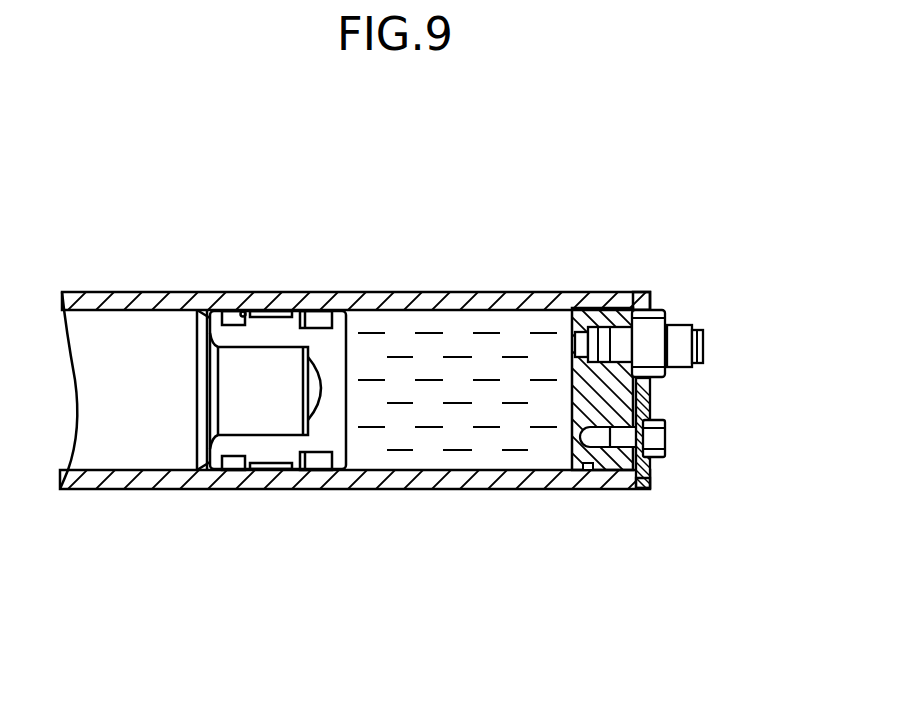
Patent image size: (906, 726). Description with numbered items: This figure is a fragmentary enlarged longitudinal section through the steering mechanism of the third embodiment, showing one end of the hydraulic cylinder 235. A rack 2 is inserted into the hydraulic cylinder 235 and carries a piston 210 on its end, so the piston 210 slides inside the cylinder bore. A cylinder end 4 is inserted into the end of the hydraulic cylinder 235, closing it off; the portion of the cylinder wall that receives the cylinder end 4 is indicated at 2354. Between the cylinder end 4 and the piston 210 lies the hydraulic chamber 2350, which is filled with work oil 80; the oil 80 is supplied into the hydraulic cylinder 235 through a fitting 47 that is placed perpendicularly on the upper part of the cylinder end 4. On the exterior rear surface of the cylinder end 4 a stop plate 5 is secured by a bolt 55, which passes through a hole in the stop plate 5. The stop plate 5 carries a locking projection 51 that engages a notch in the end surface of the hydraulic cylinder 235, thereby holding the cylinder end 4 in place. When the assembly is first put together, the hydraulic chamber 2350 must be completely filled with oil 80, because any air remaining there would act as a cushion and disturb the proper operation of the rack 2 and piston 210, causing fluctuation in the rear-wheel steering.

The rack 2 is at (122, 337).
The hydraulic cylinder 235 is at (382, 300).
The hydraulic chamber 2350 is at (467, 455).
The cylinder wall end portion 2354 is at (657, 299).
The piston 210 is at (272, 450).
The work oil 80 is at (405, 433).
The cylinder end 4 is at (587, 392).
The fitting 47 is at (682, 327).
The stop plate 5 is at (653, 393).
The bolt 55 is at (665, 438).
The locking projection 51 is at (638, 489).